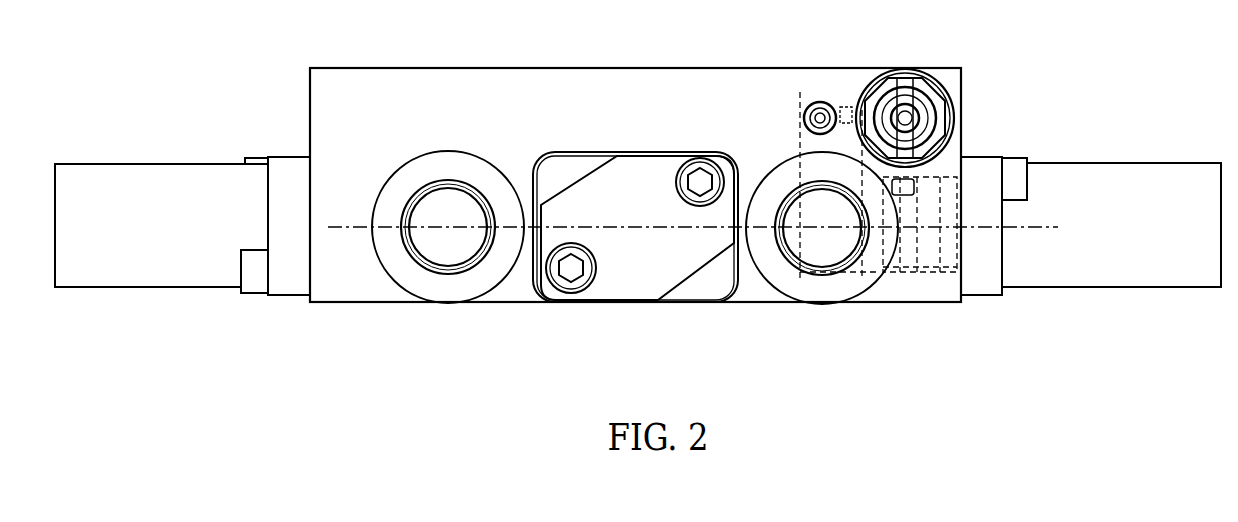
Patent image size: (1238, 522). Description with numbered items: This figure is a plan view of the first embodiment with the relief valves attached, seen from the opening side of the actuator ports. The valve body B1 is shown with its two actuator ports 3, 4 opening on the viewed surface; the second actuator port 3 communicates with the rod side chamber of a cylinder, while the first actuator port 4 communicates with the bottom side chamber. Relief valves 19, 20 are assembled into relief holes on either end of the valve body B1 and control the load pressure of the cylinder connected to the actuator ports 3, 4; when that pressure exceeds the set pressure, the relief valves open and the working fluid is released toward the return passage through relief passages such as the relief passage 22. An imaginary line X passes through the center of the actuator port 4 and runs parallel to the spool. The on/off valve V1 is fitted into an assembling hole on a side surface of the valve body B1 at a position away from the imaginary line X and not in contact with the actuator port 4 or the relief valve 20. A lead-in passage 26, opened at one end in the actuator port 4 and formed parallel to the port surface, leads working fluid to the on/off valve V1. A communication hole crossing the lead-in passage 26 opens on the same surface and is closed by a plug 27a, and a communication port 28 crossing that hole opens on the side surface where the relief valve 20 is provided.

The valve body B1 is at (571, 84).
The imaginary line X is at (344, 222).
The relief valve 19 is at (173, 181).
The relief valve 20 is at (1088, 181).
The second actuator port 3 is at (446, 258).
The first actuator port 4 is at (833, 257).
The lead-in passage 26 is at (800, 142).
The plug 27a is at (820, 101).
The communication port 28 is at (849, 104).
The on/off valve V1 is at (928, 100).
The relief passage 22 is at (908, 280).